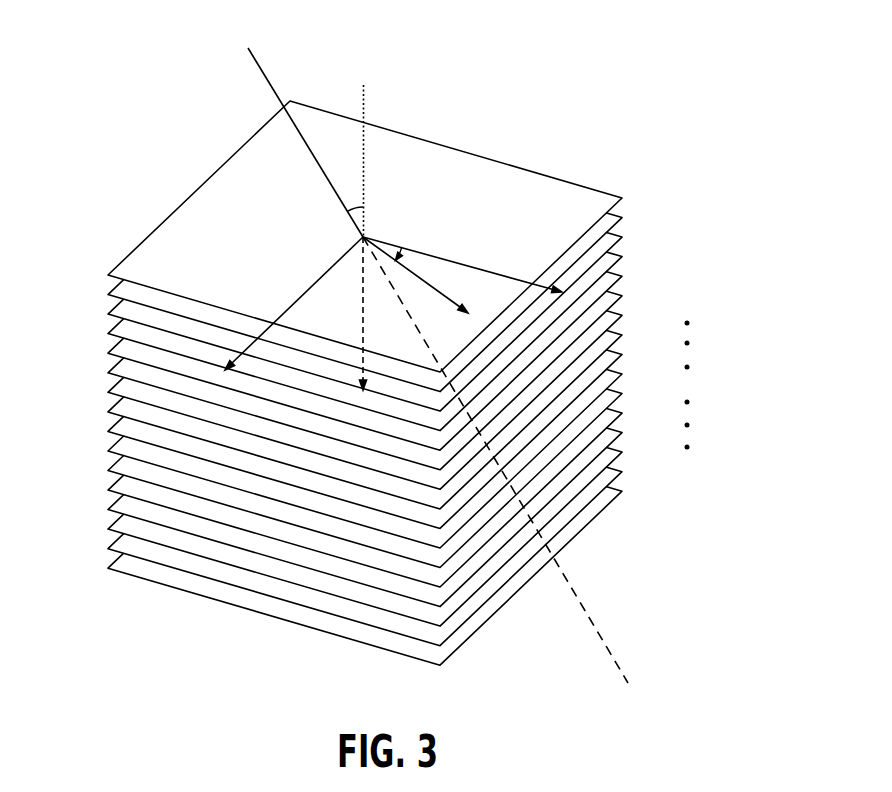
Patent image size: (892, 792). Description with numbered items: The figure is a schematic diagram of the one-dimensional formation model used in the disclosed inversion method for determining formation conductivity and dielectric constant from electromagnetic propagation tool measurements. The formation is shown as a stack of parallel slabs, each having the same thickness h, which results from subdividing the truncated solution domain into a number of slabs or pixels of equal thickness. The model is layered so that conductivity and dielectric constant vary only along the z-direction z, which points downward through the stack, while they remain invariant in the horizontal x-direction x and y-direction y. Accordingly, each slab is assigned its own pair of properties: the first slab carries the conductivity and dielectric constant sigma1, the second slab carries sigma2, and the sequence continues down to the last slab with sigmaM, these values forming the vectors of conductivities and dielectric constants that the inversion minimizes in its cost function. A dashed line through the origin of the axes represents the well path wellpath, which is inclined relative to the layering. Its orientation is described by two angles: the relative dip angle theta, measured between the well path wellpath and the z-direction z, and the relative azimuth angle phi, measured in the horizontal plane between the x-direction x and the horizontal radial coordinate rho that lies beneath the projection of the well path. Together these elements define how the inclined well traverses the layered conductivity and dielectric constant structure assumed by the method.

The slab thickness h is at (107, 295).
The well path wellpath is at (504, 365).
The z-direction z is at (362, 254).
The x-direction x is at (475, 277).
The y-direction y is at (281, 318).
The radial coordinate rho is at (429, 287).
The relative dip angle theta is at (349, 180).
The relative azimuth angle phi is at (408, 260).
The conductivity and dielectric constant of first slab sigma1 is at (688, 215).
The conductivity and dielectric constant of second slab sigma2 is at (688, 273).
The conductivity and dielectric constant of last slab sigmaM is at (683, 500).